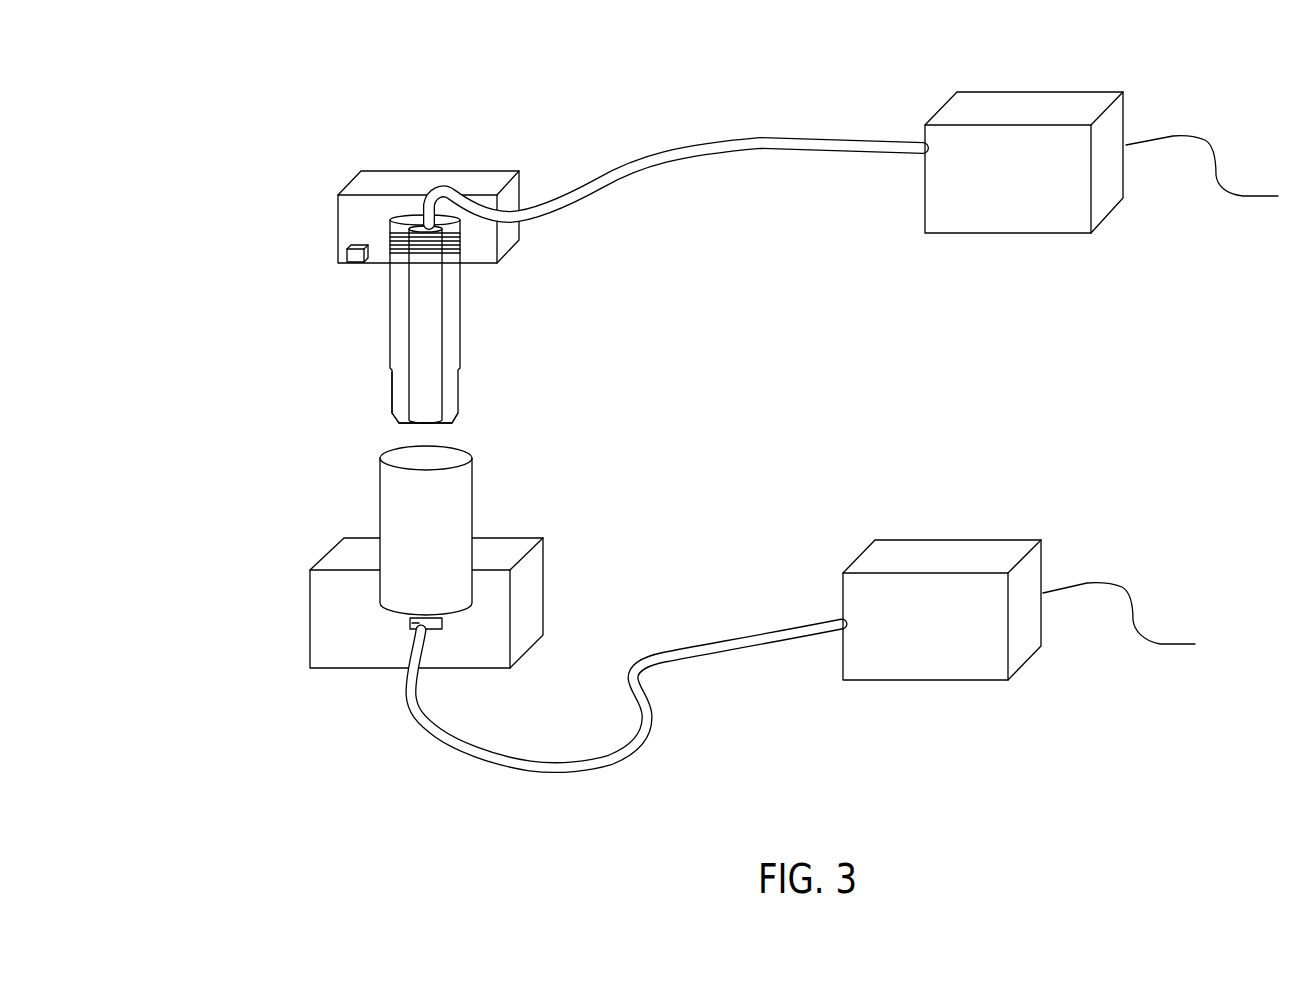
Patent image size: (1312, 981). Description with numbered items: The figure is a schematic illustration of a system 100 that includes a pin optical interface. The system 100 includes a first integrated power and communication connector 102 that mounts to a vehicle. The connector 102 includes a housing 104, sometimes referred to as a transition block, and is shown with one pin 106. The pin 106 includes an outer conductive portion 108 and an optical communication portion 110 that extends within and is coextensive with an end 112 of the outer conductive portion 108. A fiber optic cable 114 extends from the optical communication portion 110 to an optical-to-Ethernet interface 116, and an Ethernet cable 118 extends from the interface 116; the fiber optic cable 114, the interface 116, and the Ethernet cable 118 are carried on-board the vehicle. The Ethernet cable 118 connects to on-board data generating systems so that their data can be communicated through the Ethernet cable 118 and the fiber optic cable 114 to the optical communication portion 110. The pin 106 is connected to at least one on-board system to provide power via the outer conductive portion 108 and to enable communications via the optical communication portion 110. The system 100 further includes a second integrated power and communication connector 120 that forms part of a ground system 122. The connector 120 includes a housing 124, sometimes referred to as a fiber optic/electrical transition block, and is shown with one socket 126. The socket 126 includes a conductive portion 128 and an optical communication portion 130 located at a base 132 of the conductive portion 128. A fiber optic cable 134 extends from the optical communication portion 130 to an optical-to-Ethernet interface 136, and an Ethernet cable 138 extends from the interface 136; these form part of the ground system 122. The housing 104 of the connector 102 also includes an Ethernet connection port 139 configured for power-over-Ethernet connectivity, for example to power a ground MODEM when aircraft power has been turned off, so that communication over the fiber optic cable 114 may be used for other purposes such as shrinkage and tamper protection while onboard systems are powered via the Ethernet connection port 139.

The system 100 is at (302, 129).
The first integrated power and communication connector 102 is at (343, 300).
The housing 104 is at (488, 178).
The pin 106 is at (388, 345).
The outer conductive portion 108 is at (398, 392).
The optical communication portion 110 is at (428, 347).
The end 112 is at (455, 417).
The fiber optic cable 114 is at (733, 140).
The optical-to-Ethernet interface 116 is at (1060, 98).
The Ethernet cable 118 is at (1220, 132).
The second integrated power and communication connector 120 is at (275, 594).
The ground system 122 is at (852, 452).
The housing 124 is at (338, 555).
The socket 126 is at (476, 496).
The conductive portion 128 is at (397, 493).
The optical communication portion 130 is at (410, 622).
The base 132 is at (386, 614).
The fiber optic cable 134 is at (512, 757).
The optical-to-Ethernet interface 136 is at (977, 545).
The Ethernet cable 138 is at (1137, 583).
The Ethernet connection port 139 is at (348, 243).